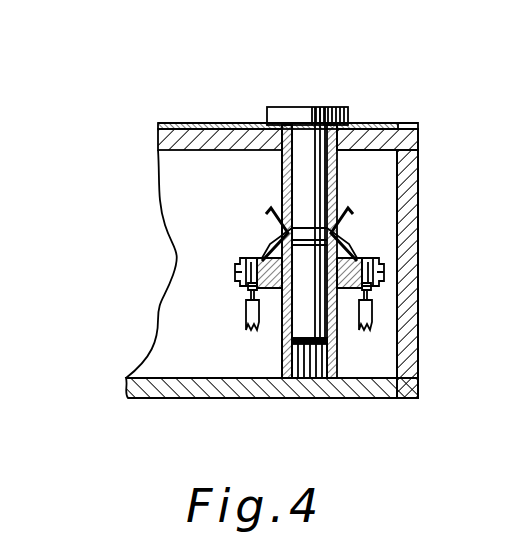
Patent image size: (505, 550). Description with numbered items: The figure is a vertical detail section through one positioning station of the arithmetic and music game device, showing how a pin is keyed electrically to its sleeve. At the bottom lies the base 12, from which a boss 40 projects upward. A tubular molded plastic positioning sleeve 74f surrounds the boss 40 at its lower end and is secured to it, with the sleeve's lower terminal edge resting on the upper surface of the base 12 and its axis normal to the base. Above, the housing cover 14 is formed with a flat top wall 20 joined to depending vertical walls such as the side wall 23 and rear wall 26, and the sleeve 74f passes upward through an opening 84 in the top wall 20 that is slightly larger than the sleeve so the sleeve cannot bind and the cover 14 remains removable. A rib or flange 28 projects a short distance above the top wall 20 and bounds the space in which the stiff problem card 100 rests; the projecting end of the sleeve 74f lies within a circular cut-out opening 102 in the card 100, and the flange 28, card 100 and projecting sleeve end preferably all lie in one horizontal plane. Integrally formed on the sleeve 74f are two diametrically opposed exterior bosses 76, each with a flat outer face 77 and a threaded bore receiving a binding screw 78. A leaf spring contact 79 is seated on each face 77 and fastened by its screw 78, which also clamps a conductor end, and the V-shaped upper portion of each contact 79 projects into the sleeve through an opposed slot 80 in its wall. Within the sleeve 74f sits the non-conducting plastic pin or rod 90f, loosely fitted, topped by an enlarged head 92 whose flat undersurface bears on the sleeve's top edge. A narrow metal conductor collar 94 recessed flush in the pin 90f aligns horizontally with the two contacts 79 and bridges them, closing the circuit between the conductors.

The base 12 is at (181, 399).
The housing cover 14 is at (420, 165).
The top wall 20 is at (157, 140).
The side wall 23 is at (408, 246).
The rear wall 26 is at (380, 208).
The rib or flange 28 is at (410, 124).
The boss 40 is at (318, 372).
The positioning sleeve 74f is at (281, 162).
The exterior boss 76 is at (262, 313).
The flat outer face 77 is at (240, 293).
The binding screw 78 is at (240, 262).
The leaf spring contact 79 is at (270, 239).
The slot 80 is at (270, 211).
The opening 84 is at (365, 124).
The pin or rod 90f is at (304, 152).
The head 92 is at (283, 107).
The conductor collar 94 is at (304, 246).
The problem card 100 is at (175, 123).
The cut-out opening 102 is at (238, 123).